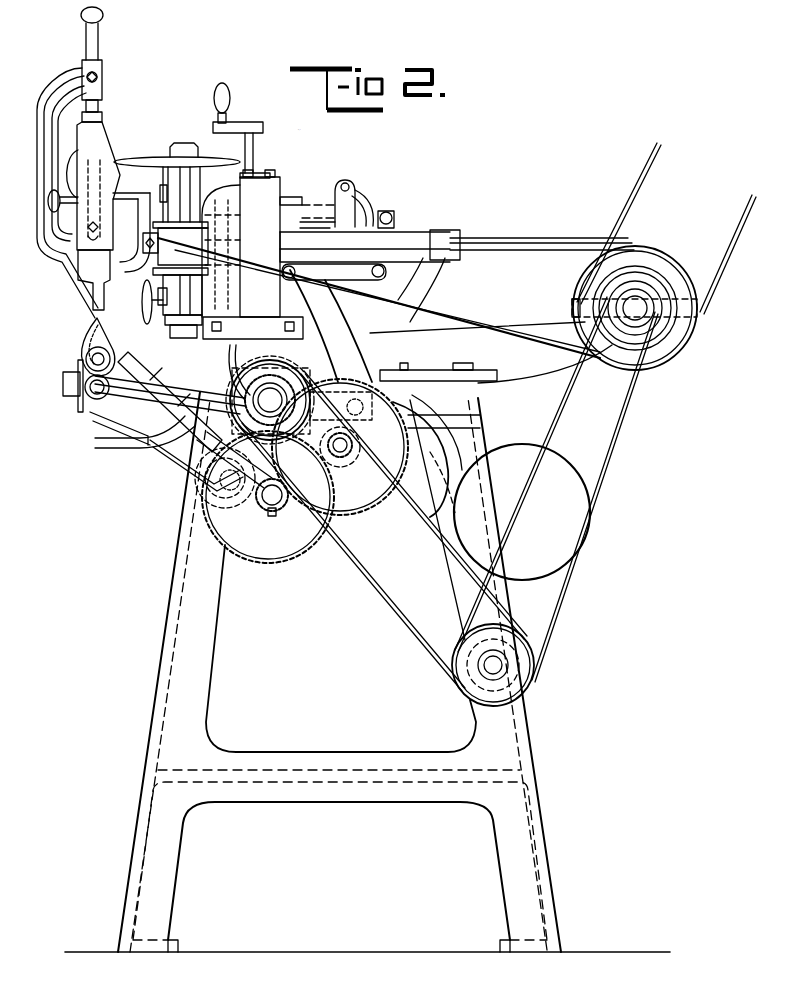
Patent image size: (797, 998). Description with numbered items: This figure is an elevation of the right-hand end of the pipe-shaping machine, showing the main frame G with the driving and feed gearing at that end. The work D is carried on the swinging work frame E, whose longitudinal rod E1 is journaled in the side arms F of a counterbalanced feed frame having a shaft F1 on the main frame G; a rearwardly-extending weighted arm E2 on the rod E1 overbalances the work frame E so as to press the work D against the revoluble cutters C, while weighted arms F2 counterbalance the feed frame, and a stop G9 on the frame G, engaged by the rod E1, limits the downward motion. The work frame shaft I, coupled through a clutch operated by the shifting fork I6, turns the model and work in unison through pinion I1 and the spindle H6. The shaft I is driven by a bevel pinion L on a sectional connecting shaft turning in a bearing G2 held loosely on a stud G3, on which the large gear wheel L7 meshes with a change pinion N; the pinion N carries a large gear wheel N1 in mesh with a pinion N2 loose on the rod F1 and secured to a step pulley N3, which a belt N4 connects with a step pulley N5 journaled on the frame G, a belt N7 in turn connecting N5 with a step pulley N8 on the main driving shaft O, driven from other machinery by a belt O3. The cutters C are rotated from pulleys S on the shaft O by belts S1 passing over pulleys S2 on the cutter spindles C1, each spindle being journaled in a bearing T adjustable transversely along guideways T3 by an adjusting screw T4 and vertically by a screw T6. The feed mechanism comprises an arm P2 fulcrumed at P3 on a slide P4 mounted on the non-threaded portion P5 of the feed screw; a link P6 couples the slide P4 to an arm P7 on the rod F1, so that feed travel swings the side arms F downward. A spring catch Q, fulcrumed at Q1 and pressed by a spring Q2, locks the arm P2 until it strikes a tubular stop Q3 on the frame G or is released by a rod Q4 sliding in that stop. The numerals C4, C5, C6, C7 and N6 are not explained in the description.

The work frame shaft I is at (99, 50).
The pinion I1 is at (104, 74).
The shifting fork I6 is at (92, 338).
The swinging work frame E is at (42, 158).
The rod E1 is at (80, 396).
The weighted arm E2 is at (112, 424).
The work D is at (103, 142).
The revoluble cutter C is at (166, 158).
The cutter spindle C1 is at (138, 370).
The pinion shaft C4 is at (352, 446).
The pinion C5 is at (356, 454).
The bolt C6 is at (250, 345).
The bolt C7 is at (270, 345).
The stop G9 is at (104, 449).
The spring catch Q is at (337, 202).
The catch fulcrum Q1 is at (346, 183).
The spring Q2 is at (373, 192).
The tubular stop Q3 is at (291, 197).
The rod Q4 is at (50, 206).
The bearing T is at (233, 200).
The guideways T3 is at (257, 318).
The adjusting screw T4 is at (144, 304).
The vertical adjusting screw T6 is at (258, 116).
The pulley S is at (672, 280).
The belt S1 is at (503, 247).
The pulley S2 is at (150, 256).
The main driving shaft O is at (610, 302).
The belt O3 is at (712, 296).
The arm P2 is at (328, 224).
The arm fulcrum P3 is at (392, 212).
The slide P4 is at (420, 225).
The non-threaded portion of feed screw P5 is at (442, 232).
The link P6 is at (362, 279).
The arm P7 is at (358, 364).
The side arm F is at (188, 390).
The shaft F1 is at (242, 372).
The weighted arm F2 is at (422, 460).
The pinion N is at (340, 447).
The large gear wheel N1 is at (376, 506).
The pinion N2 is at (300, 382).
The step pulley N3 is at (234, 386).
The belt N4 is at (372, 574).
The step pulley N5 is at (478, 673).
The pulley rim N6 is at (536, 666).
The belt N7 is at (556, 426).
The step pulley N8 is at (638, 292).
The main frame G is at (150, 697).
The bearing G2 is at (240, 508).
The stud G3 is at (282, 506).
The spindle H6 is at (198, 470).
The bevel pinion L is at (201, 455).
The large gear wheel L7 is at (268, 563).